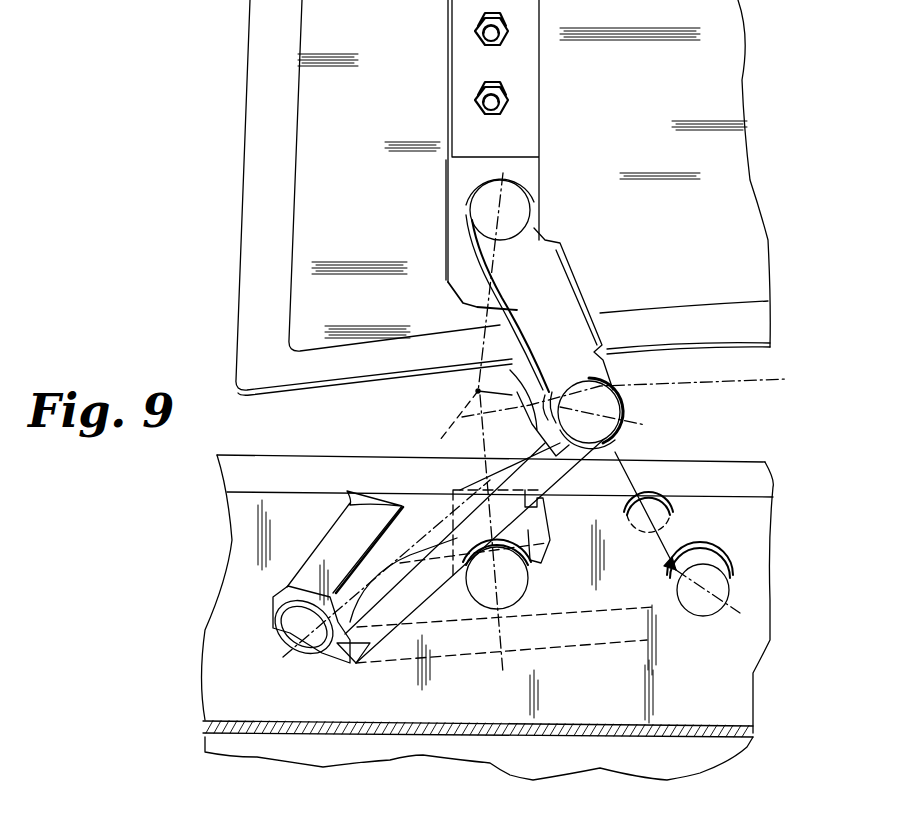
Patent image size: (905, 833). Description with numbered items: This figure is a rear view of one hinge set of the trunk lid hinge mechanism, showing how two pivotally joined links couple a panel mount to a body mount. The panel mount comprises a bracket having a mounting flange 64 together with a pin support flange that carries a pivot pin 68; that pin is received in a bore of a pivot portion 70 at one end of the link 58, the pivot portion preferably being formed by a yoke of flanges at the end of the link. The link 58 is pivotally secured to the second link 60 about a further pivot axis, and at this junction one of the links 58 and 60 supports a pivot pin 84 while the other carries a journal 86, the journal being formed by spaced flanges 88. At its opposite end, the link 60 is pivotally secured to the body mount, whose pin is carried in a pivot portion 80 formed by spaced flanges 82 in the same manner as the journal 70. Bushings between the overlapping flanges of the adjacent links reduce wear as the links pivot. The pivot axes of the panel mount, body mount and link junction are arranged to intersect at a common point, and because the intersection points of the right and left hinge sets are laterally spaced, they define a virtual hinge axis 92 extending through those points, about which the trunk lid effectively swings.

The link 58 is at (568, 302).
The link 60 is at (422, 592).
The mounting flange 64 is at (508, 70).
The pivot pin 68 is at (523, 202).
The pivot portion 70 is at (447, 221).
The pivot portion 80 is at (275, 598).
The spaced flanges 82 is at (279, 594).
The pivot pin 84 is at (607, 407).
The journal 86 is at (610, 447).
The spaced flanges 88 is at (513, 427).
The virtual hinge axis 92 is at (743, 383).